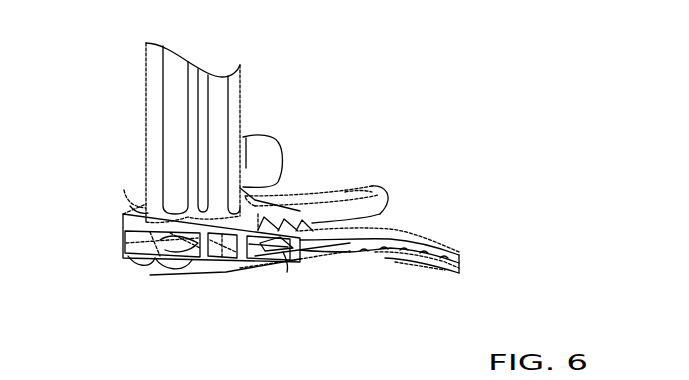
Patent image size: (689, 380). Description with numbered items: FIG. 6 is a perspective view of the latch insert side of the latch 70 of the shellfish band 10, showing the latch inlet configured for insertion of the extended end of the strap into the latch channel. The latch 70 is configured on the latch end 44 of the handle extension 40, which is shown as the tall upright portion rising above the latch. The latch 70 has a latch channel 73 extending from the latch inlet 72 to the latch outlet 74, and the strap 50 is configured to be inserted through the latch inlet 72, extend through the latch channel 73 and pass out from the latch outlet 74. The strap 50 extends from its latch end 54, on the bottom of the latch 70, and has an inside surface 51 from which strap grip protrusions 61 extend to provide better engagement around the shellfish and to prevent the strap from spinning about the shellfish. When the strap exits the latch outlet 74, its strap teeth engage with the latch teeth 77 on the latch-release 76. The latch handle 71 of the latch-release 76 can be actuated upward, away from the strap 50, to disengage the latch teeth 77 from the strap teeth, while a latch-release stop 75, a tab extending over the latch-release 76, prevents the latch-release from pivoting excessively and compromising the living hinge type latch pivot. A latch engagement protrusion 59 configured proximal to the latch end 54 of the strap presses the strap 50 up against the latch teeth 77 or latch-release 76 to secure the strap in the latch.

The connector assembly 10 is at (121, 56).
The handle extension 40 is at (152, 87).
The latch end 44 is at (124, 190).
The latch 70 is at (173, 270).
The latch inlet 72 is at (125, 263).
The latch channel 73 is at (152, 263).
The latch outlet 74 is at (260, 255).
The latch engagement protrusion 59 is at (280, 250).
The latch-release stop 75 is at (243, 137).
The latch handle 71 is at (374, 190).
The latch teeth 77 is at (285, 217).
The latch-release 76 is at (340, 196).
The strap 50 is at (412, 241).
The latch end 54 is at (308, 242).
The inside surface 51 is at (413, 257).
The strap grip protrusions 61 is at (446, 267).